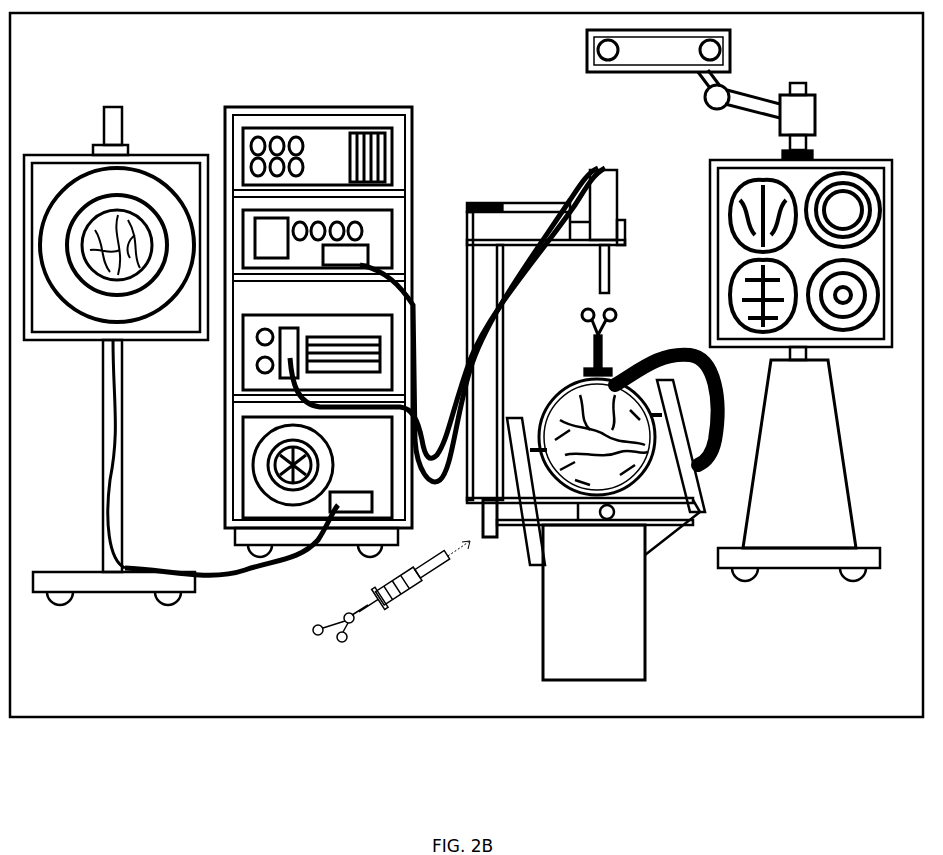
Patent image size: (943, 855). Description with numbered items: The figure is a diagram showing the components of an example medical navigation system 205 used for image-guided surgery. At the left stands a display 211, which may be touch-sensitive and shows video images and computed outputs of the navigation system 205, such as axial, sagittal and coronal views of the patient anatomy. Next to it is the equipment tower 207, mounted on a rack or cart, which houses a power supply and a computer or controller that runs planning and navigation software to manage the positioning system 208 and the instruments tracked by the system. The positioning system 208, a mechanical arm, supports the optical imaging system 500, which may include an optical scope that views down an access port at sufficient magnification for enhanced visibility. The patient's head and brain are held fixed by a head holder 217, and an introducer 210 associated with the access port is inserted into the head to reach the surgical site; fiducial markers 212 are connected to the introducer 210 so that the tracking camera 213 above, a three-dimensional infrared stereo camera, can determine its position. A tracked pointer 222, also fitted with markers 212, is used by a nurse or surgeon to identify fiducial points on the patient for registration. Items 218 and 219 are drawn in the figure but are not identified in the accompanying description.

The medical navigation system 205 is at (220, 717).
The equipment tower 207 is at (332, 107).
The positioning system 208 is at (498, 240).
The introducer 210 is at (608, 411).
The display 211 is at (148, 155).
The fiducial markers 212 is at (618, 320).
The tracking camera 213 is at (600, 73).
The head holder 217 is at (535, 535).
The head clamp 218 is at (650, 470).
The articulating arm 219 is at (748, 380).
The tracked pointer 222 is at (400, 595).
The optical imaging system 500 is at (615, 255).